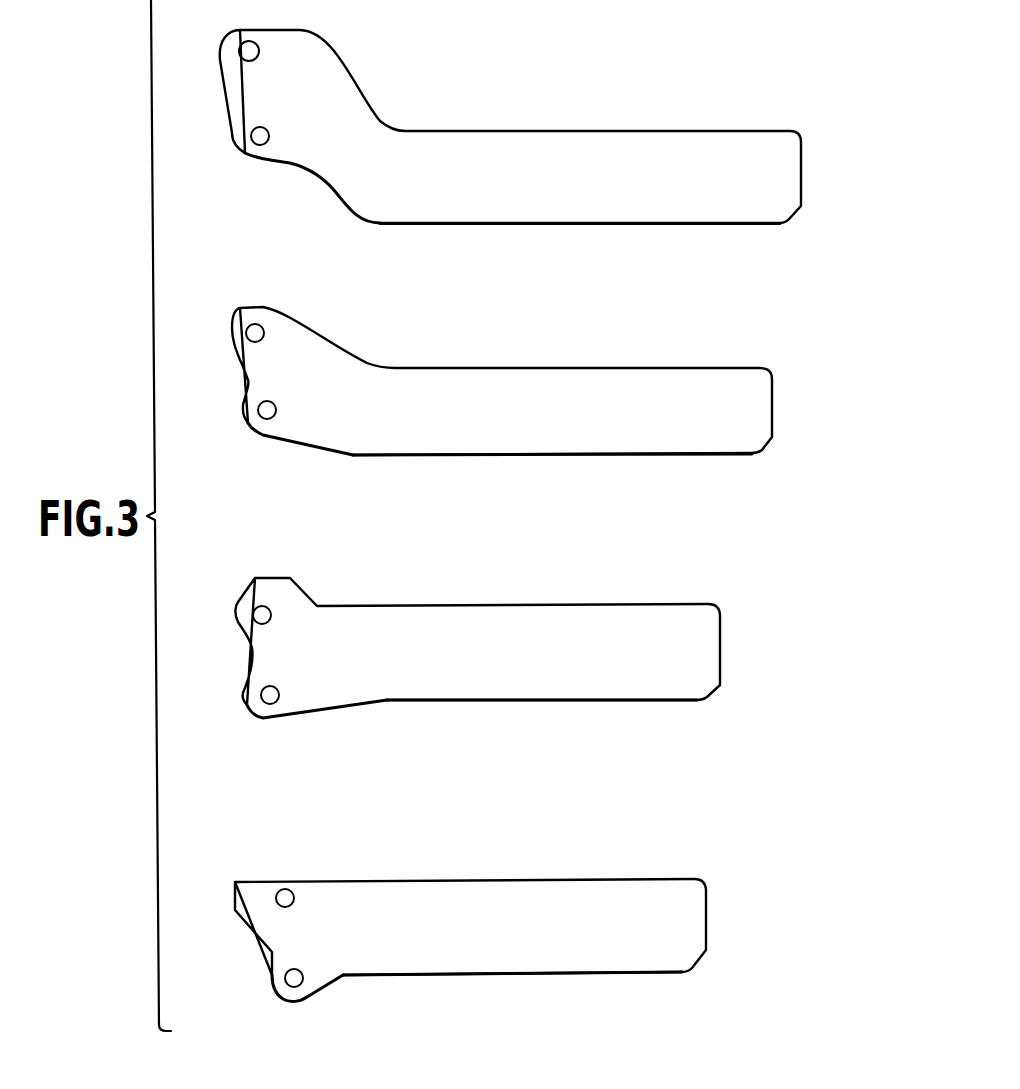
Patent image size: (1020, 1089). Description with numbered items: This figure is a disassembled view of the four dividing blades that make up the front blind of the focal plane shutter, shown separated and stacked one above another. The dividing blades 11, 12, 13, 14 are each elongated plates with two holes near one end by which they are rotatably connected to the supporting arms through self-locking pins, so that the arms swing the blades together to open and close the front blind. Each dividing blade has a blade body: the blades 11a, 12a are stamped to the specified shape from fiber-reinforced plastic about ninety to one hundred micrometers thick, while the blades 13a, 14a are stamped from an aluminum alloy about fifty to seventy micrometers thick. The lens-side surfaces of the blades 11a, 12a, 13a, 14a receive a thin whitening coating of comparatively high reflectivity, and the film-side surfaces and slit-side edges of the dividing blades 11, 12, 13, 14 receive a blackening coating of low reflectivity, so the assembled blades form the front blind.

The dividing blade 11 is at (727, 925).
The blade 11a is at (515, 957).
The dividing blade 12 is at (737, 643).
The blade 12a is at (555, 682).
The dividing blade 13 is at (797, 402).
The blade 13a is at (513, 425).
The dividing blade 14 is at (815, 160).
The blade 14a is at (508, 200).